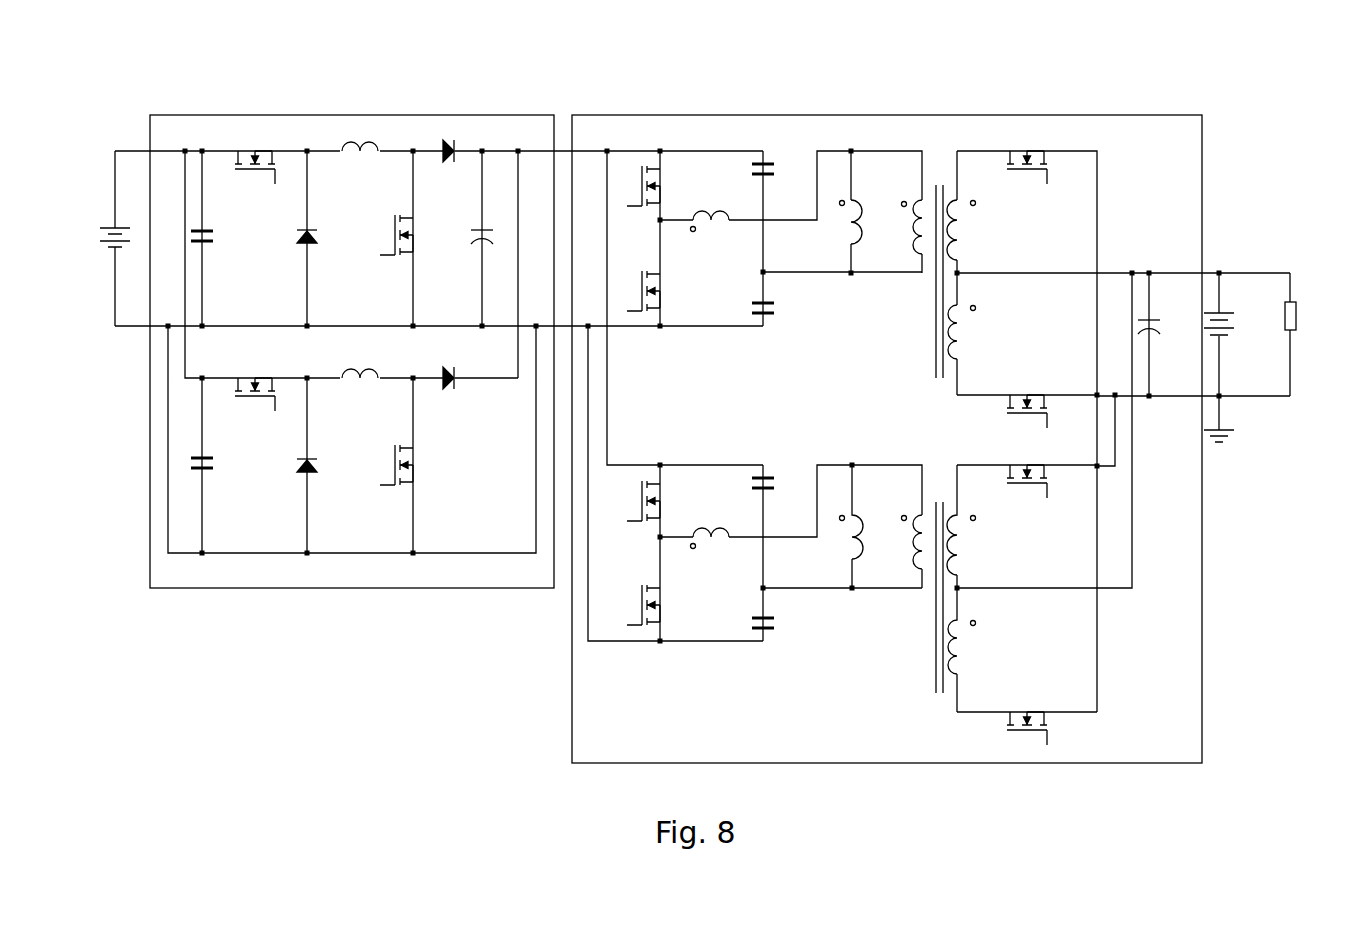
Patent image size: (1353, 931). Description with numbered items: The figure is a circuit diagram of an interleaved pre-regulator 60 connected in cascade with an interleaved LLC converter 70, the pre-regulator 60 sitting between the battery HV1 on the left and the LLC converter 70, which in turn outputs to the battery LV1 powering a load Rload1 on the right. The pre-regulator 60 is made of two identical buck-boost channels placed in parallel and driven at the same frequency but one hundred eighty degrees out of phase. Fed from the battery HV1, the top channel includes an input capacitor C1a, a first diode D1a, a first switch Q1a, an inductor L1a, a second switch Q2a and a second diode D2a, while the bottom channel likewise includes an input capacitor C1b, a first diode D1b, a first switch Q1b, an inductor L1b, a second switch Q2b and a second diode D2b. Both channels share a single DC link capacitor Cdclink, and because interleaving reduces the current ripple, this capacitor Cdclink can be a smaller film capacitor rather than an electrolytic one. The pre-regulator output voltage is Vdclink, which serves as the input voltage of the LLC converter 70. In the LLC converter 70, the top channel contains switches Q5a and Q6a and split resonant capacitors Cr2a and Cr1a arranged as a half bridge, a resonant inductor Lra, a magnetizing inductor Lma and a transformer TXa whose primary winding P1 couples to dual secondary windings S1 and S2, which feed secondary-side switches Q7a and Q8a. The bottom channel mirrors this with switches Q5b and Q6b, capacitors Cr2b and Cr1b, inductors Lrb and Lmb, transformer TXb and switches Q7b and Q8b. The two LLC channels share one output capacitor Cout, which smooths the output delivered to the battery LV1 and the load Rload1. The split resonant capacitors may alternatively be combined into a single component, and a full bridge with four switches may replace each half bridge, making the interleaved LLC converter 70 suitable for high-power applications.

The interleaved pre-regulator 60 is at (328, 110).
The interleaved LLC converter 70 is at (817, 105).
The battery HV1 is at (132, 238).
The first switch Q1a is at (237, 167).
The input capacitor C1a is at (216, 231).
The first diode D1a is at (287, 234).
The inductor L1a is at (360, 162).
The second switch Q2a is at (394, 245).
The second diode D2a is at (448, 143).
The output voltage Vdclink is at (511, 258).
The DC link capacitor Cdclink is at (508, 238).
The first switch Q1b is at (237, 394).
The input capacitor C1b is at (217, 459).
The first diode D1b is at (287, 461).
The inductor L1b is at (360, 389).
The second switch Q2b is at (394, 474).
The second diode D2b is at (445, 370).
The switch Q5a is at (643, 197).
The switch Q6a is at (643, 302).
The inductor Lra is at (710, 230).
The capacitor Cr2a is at (779, 163).
The capacitor Cr1a is at (779, 302).
The inductor Lma is at (865, 215).
The primary winding P1 is at (904, 227).
The transformer TXa is at (970, 281).
The secondary winding S1 is at (966, 230).
The secondary winding S2 is at (966, 332).
The switch Q7a is at (1008, 167).
The switch Q8a is at (1008, 411).
The output capacitor Cout is at (1166, 334).
The battery LV1 is at (1193, 357).
The load Rload1 is at (1313, 334).
The switch Q5b is at (643, 512).
The switch Q6b is at (643, 617).
The inductor Lrb is at (710, 546).
The capacitor Cr2b is at (779, 477).
The capacitor Cr1b is at (779, 618).
The inductor Lmb is at (865, 511).
The transformer TXb is at (992, 508).
The switch Q7b is at (1008, 481).
The switch Q8b is at (1008, 728).